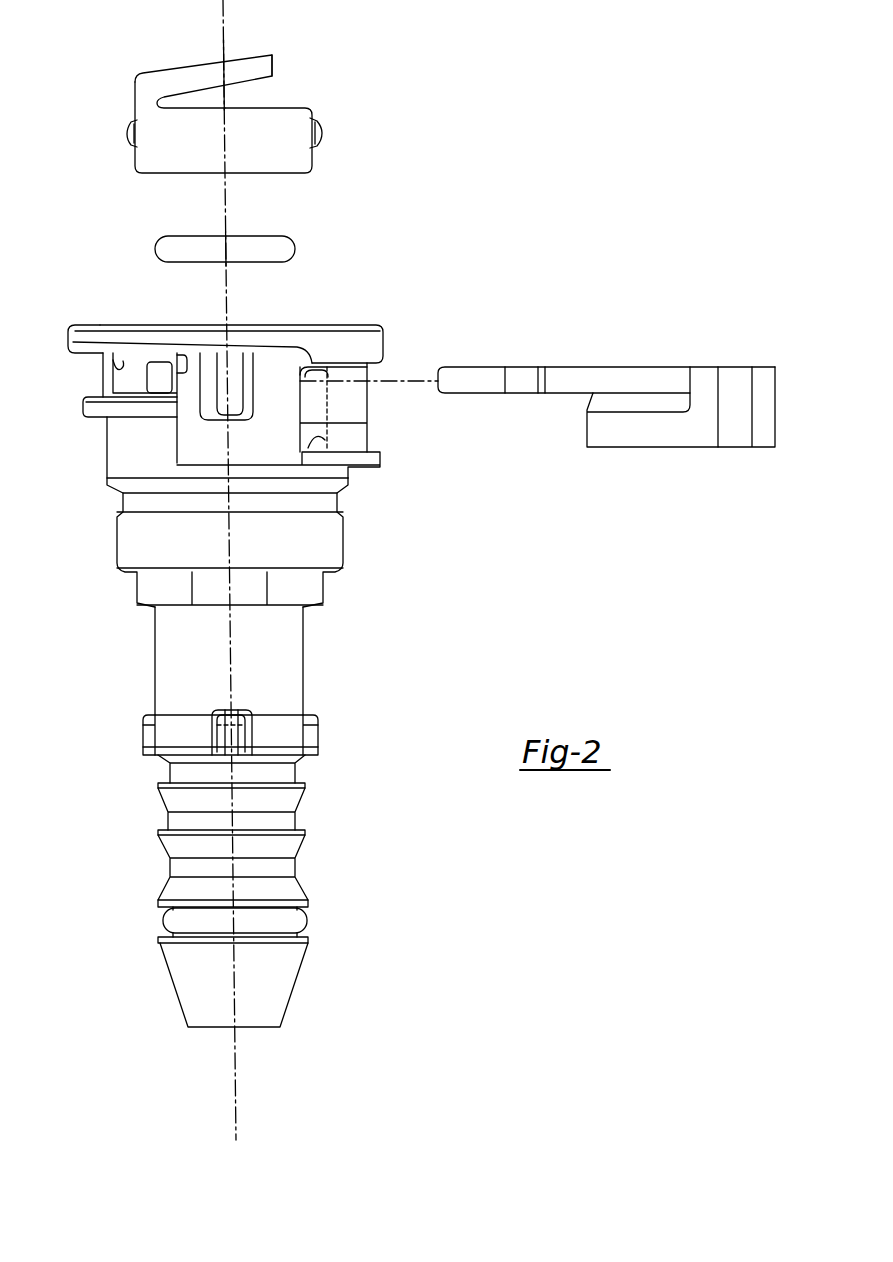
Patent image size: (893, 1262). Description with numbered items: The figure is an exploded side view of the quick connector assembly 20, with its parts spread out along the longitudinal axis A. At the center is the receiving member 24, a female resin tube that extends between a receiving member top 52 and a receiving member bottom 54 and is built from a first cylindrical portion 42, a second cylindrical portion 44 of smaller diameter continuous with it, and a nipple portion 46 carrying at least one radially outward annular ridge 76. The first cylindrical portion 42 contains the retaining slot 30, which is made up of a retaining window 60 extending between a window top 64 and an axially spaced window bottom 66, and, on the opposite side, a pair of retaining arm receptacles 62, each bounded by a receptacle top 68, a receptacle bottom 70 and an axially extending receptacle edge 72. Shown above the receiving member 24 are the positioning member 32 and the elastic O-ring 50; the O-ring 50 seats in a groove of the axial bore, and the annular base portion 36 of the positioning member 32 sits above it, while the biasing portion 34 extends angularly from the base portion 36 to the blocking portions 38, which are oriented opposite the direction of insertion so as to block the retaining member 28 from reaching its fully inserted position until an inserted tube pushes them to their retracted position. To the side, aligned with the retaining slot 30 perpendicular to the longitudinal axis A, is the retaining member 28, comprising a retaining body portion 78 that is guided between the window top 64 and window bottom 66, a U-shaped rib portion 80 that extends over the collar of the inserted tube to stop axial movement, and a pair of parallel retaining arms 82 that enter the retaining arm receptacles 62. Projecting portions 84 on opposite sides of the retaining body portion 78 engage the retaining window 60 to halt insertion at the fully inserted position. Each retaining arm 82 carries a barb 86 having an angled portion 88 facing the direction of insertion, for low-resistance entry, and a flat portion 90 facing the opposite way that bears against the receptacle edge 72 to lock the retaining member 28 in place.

The quick connector assembly 20 is at (128, 43).
The longitudinal axis A is at (224, 30).
The receiving member 24 is at (308, 667).
The retaining member 28 is at (732, 362).
The retaining slot 30 is at (370, 407).
The positioning member 32 is at (172, 177).
The biasing portion 34 is at (200, 62).
The base portion 36 is at (260, 162).
The blocking portions 38 is at (273, 63).
The first cylindrical portion 42 is at (70, 342).
The second cylindrical portion 44 is at (332, 547).
The nipple portion 46 is at (287, 735).
The elastic O-ring 50 is at (297, 247).
The receiving member top 52 is at (263, 325).
The receiving member bottom 54 is at (263, 1027).
The retaining window 60 is at (317, 377).
The retaining arm receptacles 62 is at (163, 370).
The window top 64 is at (347, 370).
The window bottom 66 is at (323, 433).
The receptacle top 68 is at (122, 368).
The receptacle bottom 70 is at (112, 393).
The receptacle edge 72 is at (187, 367).
The annular ridge 76 is at (305, 785).
The retaining body portion 78 is at (775, 423).
The rib portion 80 is at (620, 432).
The retaining arms 82 is at (470, 368).
The projecting portions 84 is at (707, 382).
The barb 86 is at (538, 365).
The angled portion 88 is at (520, 380).
The flat portion 90 is at (545, 377).